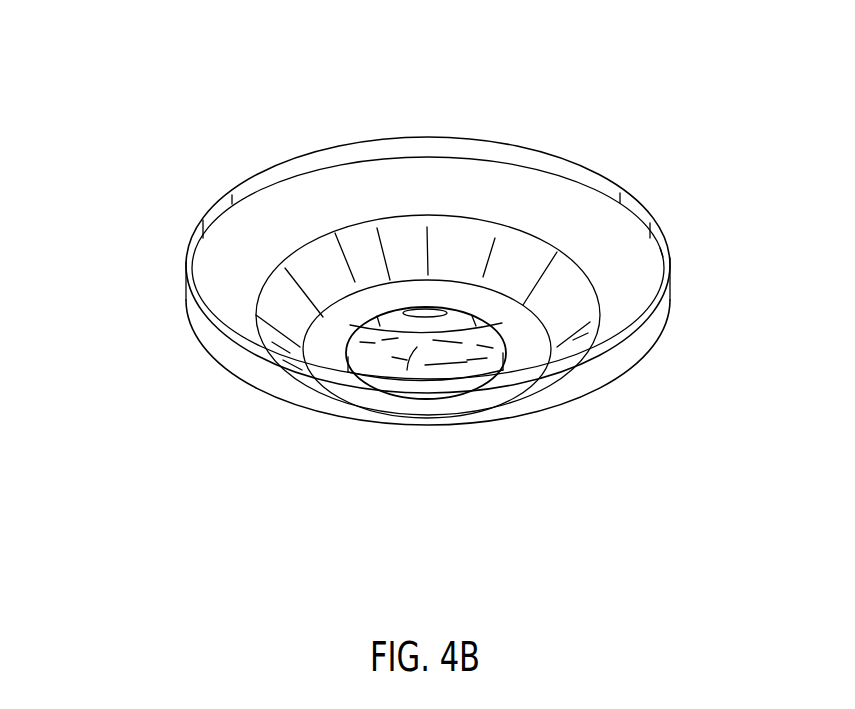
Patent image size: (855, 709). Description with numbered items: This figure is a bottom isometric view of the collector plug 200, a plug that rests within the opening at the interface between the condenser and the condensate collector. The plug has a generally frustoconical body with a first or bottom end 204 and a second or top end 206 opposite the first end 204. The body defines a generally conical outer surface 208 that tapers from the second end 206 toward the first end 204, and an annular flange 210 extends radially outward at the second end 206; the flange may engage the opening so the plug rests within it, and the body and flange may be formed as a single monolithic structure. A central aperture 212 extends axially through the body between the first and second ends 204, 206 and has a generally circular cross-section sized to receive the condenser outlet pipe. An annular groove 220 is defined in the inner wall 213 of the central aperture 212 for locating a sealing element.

The collector plug 200 is at (131, 56).
The first end 204 is at (497, 297).
The second end 206 is at (607, 182).
The conical outer surface 208 is at (573, 315).
The annular flange 210 is at (667, 251).
The central aperture 212 is at (494, 388).
The inner wall 213 is at (360, 363).
The annular groove 220 is at (397, 359).